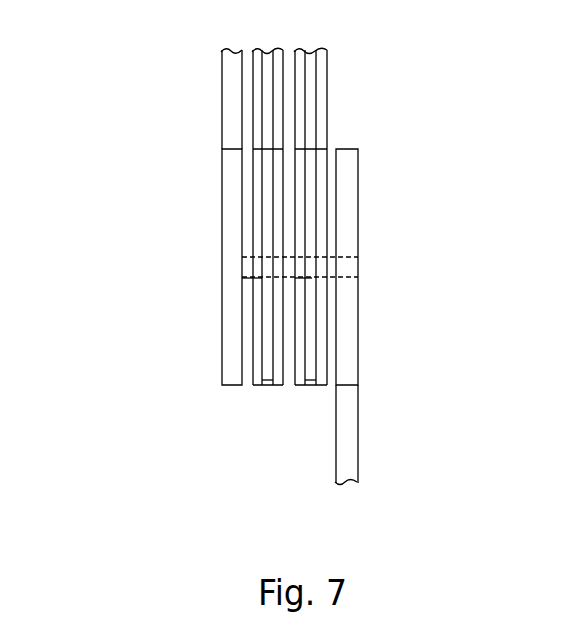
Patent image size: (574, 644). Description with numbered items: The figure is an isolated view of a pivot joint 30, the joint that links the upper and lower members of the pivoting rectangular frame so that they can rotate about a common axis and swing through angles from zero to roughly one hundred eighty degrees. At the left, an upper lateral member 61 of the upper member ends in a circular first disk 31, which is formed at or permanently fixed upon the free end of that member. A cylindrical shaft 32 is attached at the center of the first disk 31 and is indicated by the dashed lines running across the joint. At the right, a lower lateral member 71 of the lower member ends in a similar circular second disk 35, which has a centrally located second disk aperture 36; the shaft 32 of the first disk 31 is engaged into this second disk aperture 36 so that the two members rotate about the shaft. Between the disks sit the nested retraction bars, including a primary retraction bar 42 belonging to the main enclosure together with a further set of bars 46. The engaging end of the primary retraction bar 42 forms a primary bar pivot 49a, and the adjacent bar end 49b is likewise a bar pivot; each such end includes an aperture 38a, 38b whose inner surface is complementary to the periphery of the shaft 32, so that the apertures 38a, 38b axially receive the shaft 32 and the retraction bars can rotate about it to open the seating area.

The pivot joint 30 is at (118, 330).
The first disk 31 is at (227, 202).
The shaft 32 is at (332, 264).
The second disk 35 is at (352, 163).
The second disk aperture 36 is at (358, 257).
The aperture 38a is at (260, 279).
The aperture 38b is at (310, 279).
The primary retraction bar 42 is at (278, 50).
The second strip group 46 is at (321, 90).
The primary bar pivot 49a is at (269, 380).
The second strip end 49b is at (309, 380).
The upper lateral member 61 is at (227, 103).
The lower lateral member 71 is at (351, 425).